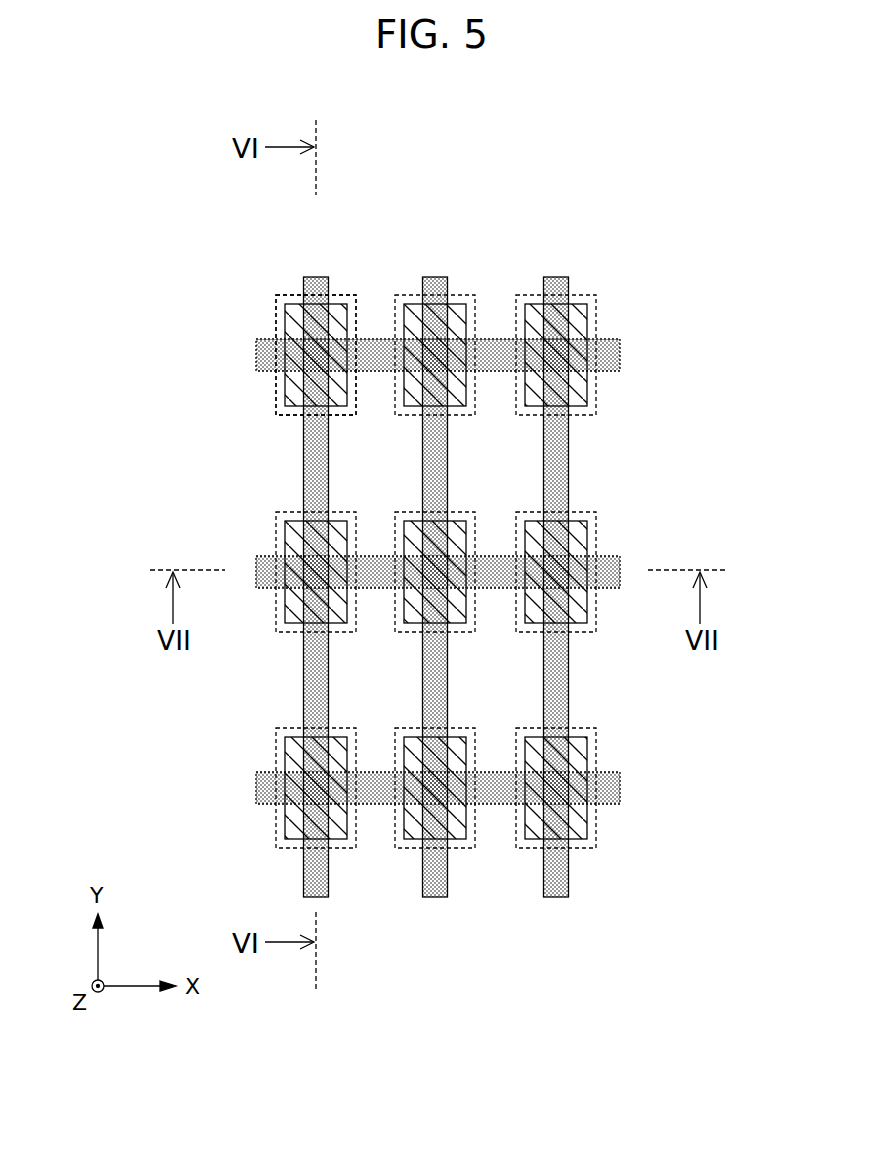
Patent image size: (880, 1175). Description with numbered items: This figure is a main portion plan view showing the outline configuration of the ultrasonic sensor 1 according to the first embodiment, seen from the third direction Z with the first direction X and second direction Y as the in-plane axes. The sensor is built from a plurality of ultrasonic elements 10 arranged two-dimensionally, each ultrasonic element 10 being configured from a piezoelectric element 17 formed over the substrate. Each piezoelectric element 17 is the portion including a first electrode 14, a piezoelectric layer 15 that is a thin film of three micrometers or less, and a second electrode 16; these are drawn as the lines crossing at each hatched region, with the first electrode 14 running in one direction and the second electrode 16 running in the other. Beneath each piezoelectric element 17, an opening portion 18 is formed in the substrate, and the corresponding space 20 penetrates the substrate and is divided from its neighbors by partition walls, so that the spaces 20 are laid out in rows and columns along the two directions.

The semiconductor device 1 is at (176, 151).
The ultrasonic element 10 is at (594, 290).
The first electrode 14 is at (318, 289).
The piezoelectric layer 15 is at (346, 302).
The second electrode 16 is at (368, 336).
The piezoelectric element 17 is at (413, 233).
The opening portion 18 is at (293, 293).
The space 20 is at (313, 323).